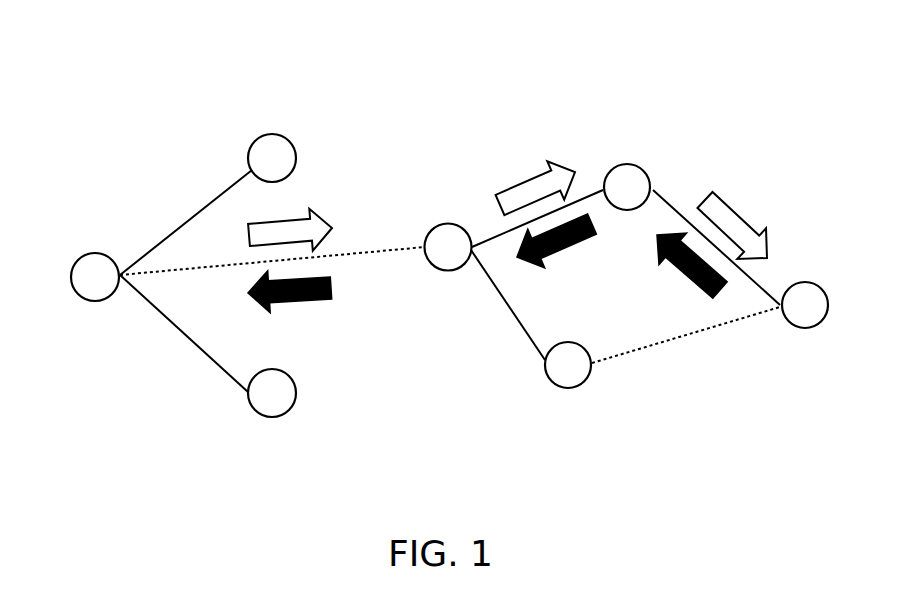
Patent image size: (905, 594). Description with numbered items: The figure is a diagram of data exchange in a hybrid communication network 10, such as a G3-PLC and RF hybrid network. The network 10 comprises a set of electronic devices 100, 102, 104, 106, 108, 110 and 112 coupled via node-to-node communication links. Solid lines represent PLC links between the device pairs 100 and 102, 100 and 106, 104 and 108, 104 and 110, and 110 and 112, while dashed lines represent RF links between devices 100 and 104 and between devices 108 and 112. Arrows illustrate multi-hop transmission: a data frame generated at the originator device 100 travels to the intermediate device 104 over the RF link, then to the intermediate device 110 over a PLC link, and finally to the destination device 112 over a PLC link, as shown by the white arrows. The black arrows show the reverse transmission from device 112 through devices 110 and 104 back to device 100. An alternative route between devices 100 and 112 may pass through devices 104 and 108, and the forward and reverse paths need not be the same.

The hybrid communication network 10 is at (436, 86).
The device 100 is at (93, 253).
The device 102 is at (272, 134).
The intermediate device 104 is at (448, 223).
The device 106 is at (270, 418).
The device 108 is at (568, 389).
The intermediate device 110 is at (625, 165).
The device 112 is at (803, 330).